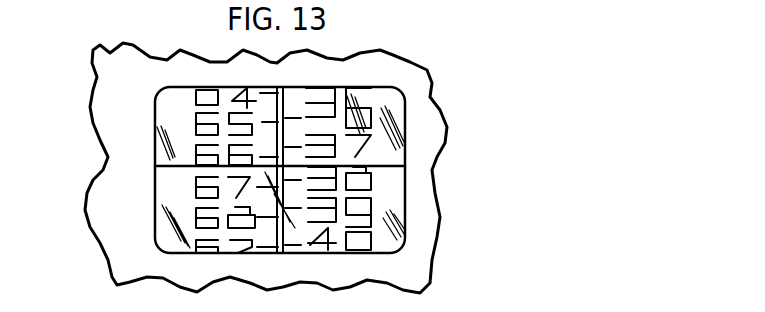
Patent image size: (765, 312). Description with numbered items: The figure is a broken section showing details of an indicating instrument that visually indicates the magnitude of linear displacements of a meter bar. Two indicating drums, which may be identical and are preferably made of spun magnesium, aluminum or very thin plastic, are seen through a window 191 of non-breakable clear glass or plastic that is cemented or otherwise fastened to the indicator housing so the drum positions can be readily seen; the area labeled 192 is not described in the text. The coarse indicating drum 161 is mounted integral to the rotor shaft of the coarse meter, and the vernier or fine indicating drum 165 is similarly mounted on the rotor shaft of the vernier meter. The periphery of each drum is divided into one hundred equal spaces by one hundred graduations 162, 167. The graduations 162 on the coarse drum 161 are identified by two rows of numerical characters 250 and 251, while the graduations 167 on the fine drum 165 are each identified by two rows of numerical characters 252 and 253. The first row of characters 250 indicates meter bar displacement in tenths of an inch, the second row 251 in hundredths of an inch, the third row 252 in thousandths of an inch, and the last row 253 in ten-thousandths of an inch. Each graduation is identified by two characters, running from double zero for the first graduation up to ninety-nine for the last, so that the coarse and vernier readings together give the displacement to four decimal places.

The coarse indicating drum 161 is at (173, 236).
The graduations 162 is at (270, 93).
The graduations 167 is at (293, 117).
The window 191 is at (172, 110).
The lower left display section 192 is at (172, 173).
The vernier or fine indicating drum 165 is at (392, 215).
The first row of numerical characters 250 is at (195, 252).
The second row of numerical characters 251 is at (244, 253).
The third row of numerical characters 252 is at (320, 247).
The last row of numerical characters 253 is at (377, 242).